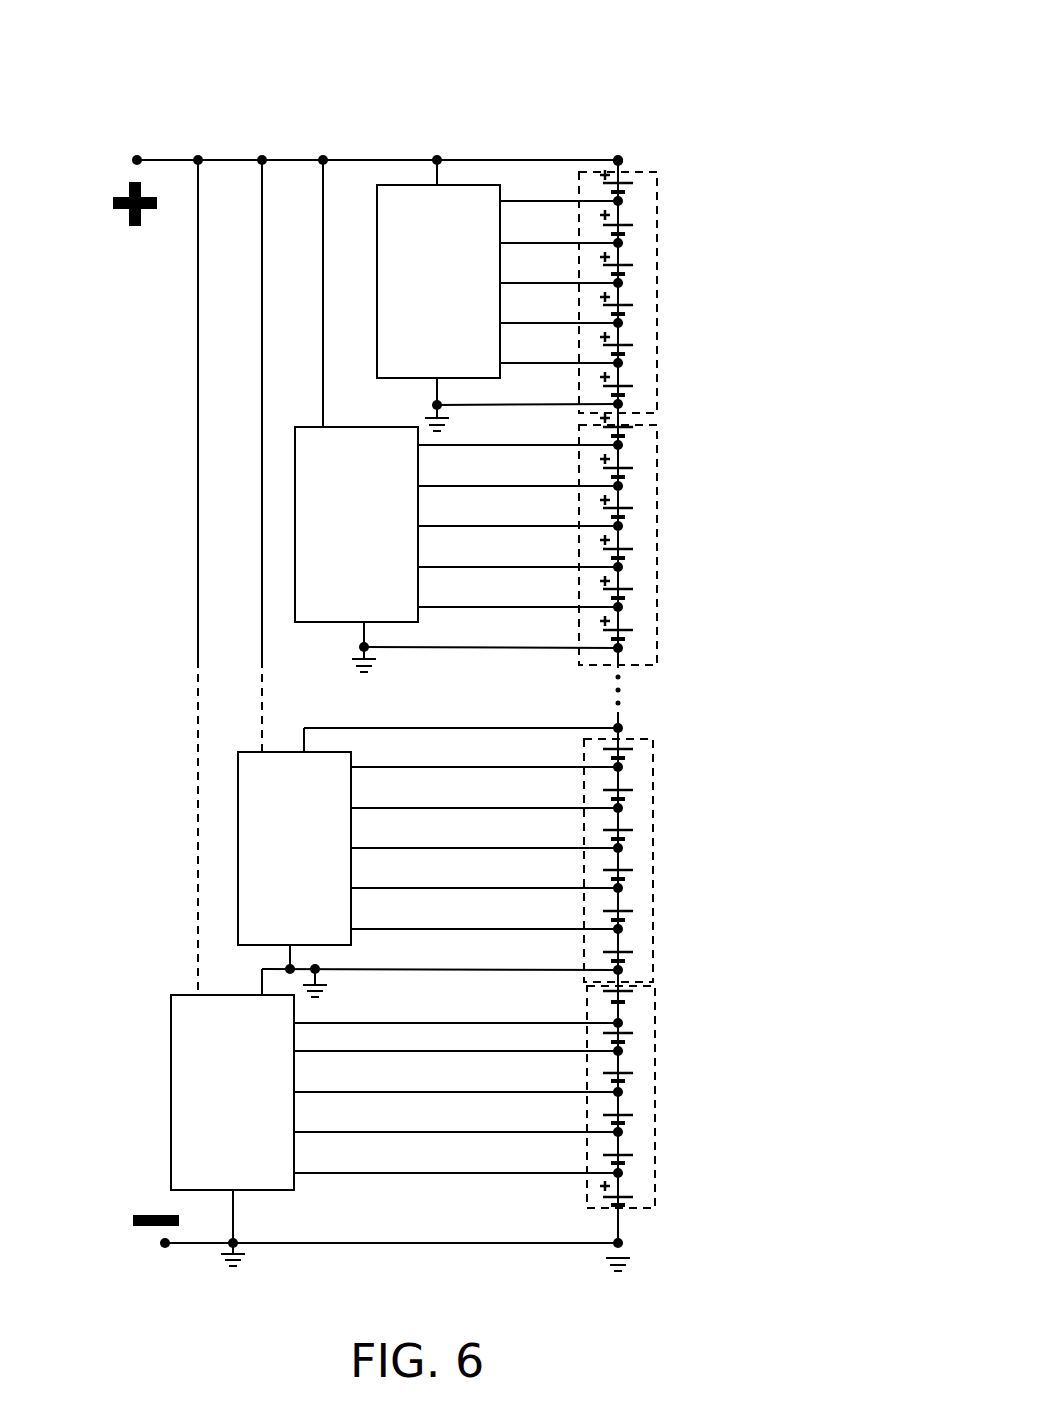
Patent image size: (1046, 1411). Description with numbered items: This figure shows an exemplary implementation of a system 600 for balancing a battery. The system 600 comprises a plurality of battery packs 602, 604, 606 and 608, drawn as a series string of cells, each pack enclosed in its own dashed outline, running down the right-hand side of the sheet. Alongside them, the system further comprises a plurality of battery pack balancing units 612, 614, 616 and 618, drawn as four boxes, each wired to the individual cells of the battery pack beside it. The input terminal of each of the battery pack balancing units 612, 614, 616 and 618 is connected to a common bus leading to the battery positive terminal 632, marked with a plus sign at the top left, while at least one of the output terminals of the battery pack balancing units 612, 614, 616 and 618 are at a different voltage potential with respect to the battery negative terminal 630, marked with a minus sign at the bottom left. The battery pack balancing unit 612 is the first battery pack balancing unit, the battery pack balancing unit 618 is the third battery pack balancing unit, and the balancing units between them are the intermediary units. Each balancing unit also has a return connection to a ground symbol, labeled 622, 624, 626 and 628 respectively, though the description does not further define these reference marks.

The system 600 is at (557, 50).
The battery pack 602 is at (644, 165).
The battery pack 604 is at (665, 667).
The battery pack 606 is at (581, 744).
The battery pack 608 is at (581, 1192).
The first battery pack balancing unit 612 is at (497, 295).
The battery pack balancing unit 614 is at (456, 537).
The battery pack balancing unit 616 is at (428, 861).
The third battery pack balancing unit 618 is at (391, 1119).
The ground reference 622 is at (430, 416).
The ground reference 624 is at (342, 663).
The ground reference 626 is at (329, 990).
The ground reference 628 is at (225, 1262).
The battery negative terminal 630 is at (150, 1250).
The battery positive terminal 632 is at (117, 175).